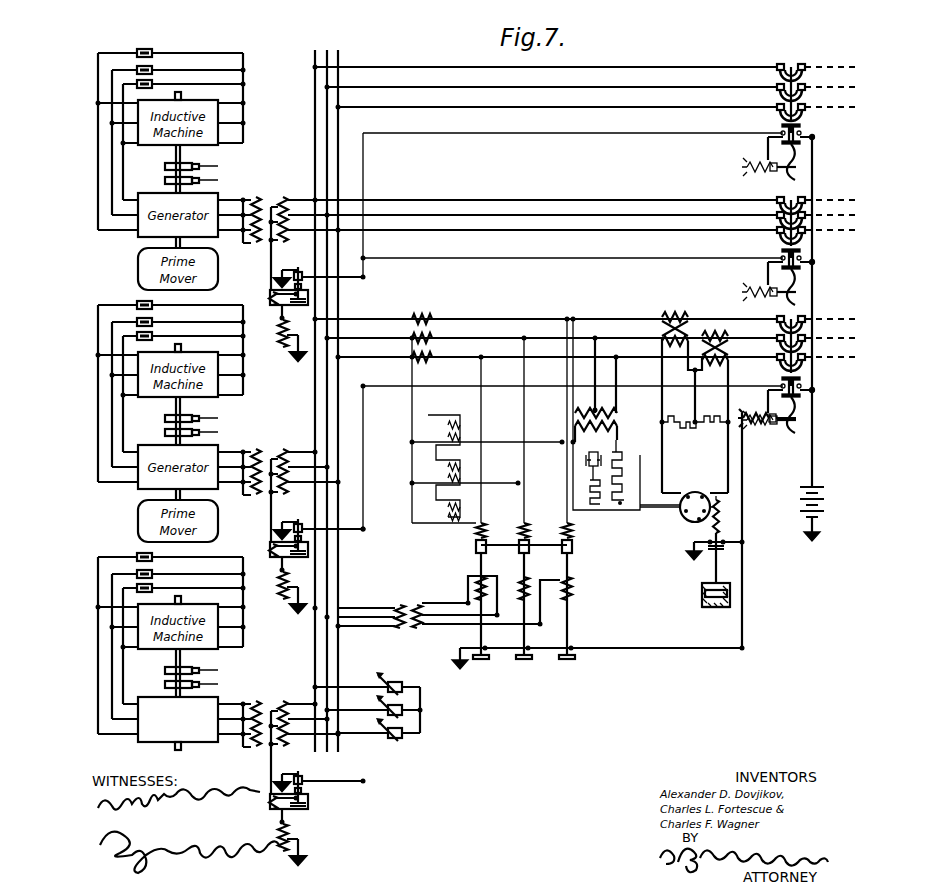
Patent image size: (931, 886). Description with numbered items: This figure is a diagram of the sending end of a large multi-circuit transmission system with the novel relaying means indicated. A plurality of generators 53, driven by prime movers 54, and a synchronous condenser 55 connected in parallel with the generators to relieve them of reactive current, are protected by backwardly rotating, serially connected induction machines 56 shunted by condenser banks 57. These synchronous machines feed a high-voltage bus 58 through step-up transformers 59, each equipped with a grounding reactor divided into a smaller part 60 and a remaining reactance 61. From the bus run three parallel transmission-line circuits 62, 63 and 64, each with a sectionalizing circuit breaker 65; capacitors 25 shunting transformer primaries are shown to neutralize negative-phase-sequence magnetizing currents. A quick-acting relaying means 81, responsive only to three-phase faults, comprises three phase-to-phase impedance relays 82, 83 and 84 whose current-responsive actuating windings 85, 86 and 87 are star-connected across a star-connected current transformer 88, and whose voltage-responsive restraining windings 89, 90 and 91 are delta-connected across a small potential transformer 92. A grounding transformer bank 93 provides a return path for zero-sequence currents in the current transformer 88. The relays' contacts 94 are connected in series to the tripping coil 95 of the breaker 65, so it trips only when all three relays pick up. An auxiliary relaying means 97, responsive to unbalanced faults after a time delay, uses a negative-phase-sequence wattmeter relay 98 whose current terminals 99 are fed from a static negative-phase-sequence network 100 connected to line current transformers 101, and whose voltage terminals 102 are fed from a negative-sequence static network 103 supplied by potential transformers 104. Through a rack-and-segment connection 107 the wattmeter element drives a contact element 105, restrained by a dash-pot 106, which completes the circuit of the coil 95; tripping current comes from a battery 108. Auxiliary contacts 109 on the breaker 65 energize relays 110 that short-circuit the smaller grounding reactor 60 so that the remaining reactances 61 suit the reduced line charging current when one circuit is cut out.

The capacitors 25 is at (398, 745).
The generators 53 is at (213, 195).
The prime movers 54 is at (220, 268).
The synchronous condensers 55 is at (192, 744).
The induction machines 56 is at (210, 145).
The condenser banks 57 is at (135, 52).
The high-voltage bus 58 is at (327, 128).
The step-up transformers 59 is at (275, 203).
The smaller grounding reactor 60 is at (270, 293).
The remaining reactances 61 is at (279, 340).
The transmission-line circuit 62 is at (408, 70).
The transmission-line circuit 63 is at (430, 198).
The transmission-line circuit 64 is at (382, 322).
The sectionalizing circuit breaker 65 is at (800, 58).
The quick-acting relaying means 81 is at (547, 692).
The phase-to-phase impedance relay 82 is at (476, 562).
The phase-to-phase impedance relay 83 is at (520, 562).
The phase-to-phase impedance relay 84 is at (563, 562).
The current-responsive actuating winding 85 is at (482, 530).
The current-responsive actuating winding 86 is at (526, 530).
The current-responsive actuating winding 87 is at (568, 526).
The star-connected current transformer 88 is at (436, 358).
The voltage-responsive restraining winding 89 is at (475, 593).
The voltage-responsive restraining winding 90 is at (519, 593).
The voltage-responsive restraining winding 91 is at (562, 593).
The potential transformer 92 is at (410, 604).
The grounding transformer bank 93 is at (448, 408).
The contacts 94 is at (566, 648).
The tripping coil 95 is at (756, 414).
The auxiliary relaying means 97 is at (698, 468).
The negative-phase-sequence wattmeter relay 98 is at (684, 510).
The current terminals 99 is at (697, 494).
The static negative-phase-sequence network 100 is at (700, 420).
The current transformers 101 is at (705, 330).
The voltage terminals 102 is at (700, 518).
The negative-sequence static network 103 is at (606, 503).
The potential transformers 104 is at (614, 415).
The contact element 105 is at (722, 550).
The dash-pot 106 is at (716, 607).
The rack-and-segment connection 107 is at (722, 510).
The battery 108 is at (826, 506).
The auxiliary contacts 109 is at (803, 130).
The relays 110 is at (304, 262).